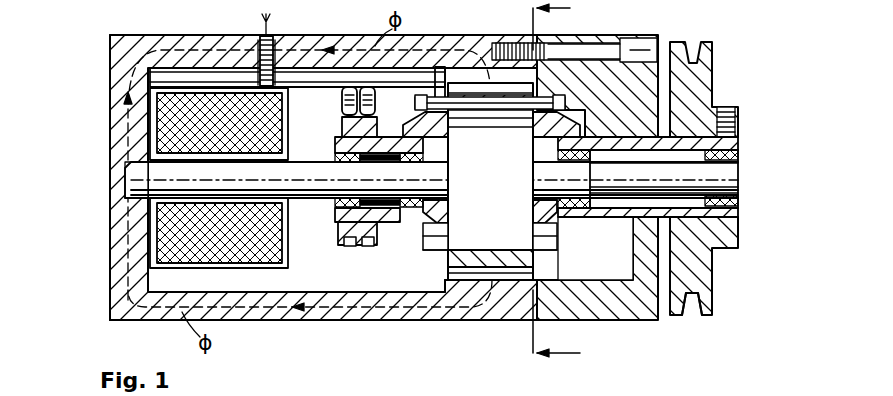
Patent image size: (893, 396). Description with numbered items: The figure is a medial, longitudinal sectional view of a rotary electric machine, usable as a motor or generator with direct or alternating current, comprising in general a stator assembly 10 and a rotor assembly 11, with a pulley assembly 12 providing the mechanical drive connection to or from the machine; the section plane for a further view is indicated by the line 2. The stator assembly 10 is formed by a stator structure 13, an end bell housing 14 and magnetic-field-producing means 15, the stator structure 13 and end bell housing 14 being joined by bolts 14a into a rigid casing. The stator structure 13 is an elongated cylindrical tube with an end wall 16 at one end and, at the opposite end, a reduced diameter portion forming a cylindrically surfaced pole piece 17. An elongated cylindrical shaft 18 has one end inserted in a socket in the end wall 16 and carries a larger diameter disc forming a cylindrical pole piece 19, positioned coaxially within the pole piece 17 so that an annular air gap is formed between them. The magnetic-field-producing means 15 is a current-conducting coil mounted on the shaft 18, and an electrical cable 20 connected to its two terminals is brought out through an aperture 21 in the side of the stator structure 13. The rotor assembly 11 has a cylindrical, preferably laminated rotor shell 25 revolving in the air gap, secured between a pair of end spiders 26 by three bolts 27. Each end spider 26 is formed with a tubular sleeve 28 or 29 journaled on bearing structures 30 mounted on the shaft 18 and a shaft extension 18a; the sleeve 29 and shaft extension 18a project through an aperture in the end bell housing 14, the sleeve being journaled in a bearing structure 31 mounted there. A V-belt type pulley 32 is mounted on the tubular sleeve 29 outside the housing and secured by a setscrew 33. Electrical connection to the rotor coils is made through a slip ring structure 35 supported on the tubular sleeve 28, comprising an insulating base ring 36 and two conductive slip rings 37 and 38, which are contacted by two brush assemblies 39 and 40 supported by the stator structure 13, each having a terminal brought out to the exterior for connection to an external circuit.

The stator assembly 10 is at (238, 326).
The rotor assembly 11 is at (420, 246).
The pulley assembly 12 is at (713, 52).
The stator structure 13 is at (332, 312).
The end bell housing 14 is at (626, 312).
The bolts 14a is at (592, 50).
The magnetic-field-producing means 15 is at (212, 258).
The end wall 16 is at (125, 265).
The pole piece 17 is at (440, 286).
The shaft 18 is at (130, 172).
The shaft extension 18a is at (732, 170).
The pole piece 19 is at (490, 181).
The electrical cable 20 is at (258, 27).
The aperture 21 is at (278, 48).
The rotor shell 25 is at (530, 258).
The end spiders 26 is at (420, 226).
The bolts 27 is at (445, 68).
The tubular sleeve 28 is at (338, 213).
The tubular sleeve 29 is at (738, 143).
The bearing structures 30 is at (340, 160).
The bearing structure 31 is at (630, 226).
The pulley 32 is at (708, 290).
The setscrew 33 is at (724, 108).
The slip ring structure 35 is at (335, 228).
The base ring 36 is at (342, 128).
The slip ring 37 is at (346, 246).
The slip ring 38 is at (364, 248).
The brush assembly 39 is at (342, 96).
The brush assembly 40 is at (437, 67).
The section line 2- 2 is at (544, 185).